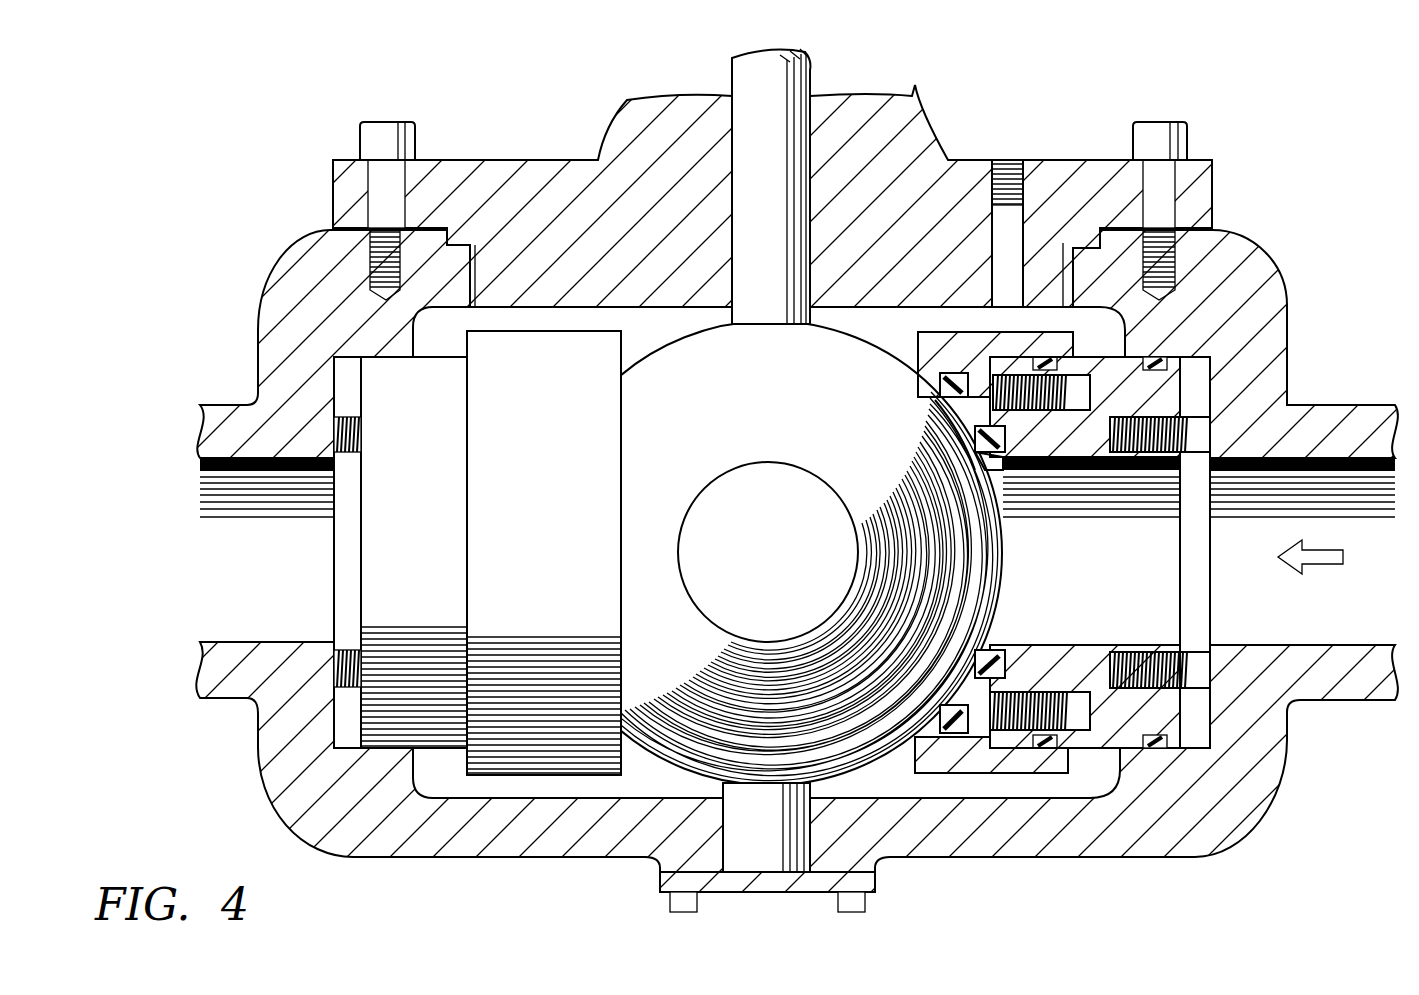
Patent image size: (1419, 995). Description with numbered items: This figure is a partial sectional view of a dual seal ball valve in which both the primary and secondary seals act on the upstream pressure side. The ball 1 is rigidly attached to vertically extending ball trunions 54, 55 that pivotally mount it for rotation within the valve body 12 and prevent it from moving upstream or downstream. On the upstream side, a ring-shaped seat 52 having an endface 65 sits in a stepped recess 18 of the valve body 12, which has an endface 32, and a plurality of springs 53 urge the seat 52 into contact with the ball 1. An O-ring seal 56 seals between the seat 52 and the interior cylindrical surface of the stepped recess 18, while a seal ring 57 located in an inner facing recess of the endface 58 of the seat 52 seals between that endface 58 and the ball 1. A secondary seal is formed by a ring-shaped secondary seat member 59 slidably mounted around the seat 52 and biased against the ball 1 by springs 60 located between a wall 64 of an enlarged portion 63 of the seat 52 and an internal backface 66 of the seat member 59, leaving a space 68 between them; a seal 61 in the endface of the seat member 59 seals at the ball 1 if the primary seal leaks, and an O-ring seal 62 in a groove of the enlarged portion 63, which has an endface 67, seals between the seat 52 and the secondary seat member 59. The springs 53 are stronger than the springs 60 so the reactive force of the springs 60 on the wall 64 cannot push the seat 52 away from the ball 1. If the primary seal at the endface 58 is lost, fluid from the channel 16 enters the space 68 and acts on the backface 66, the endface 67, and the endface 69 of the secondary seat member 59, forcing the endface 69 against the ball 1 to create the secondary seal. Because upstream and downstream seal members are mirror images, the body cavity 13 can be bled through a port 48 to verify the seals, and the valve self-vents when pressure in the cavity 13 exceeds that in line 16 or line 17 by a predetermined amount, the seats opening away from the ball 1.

The ball 1 is at (975, 548).
The valve body 12 is at (1250, 264).
The body cavity 13 is at (1090, 797).
The channel 16 is at (1300, 645).
The line 17 is at (270, 640).
The stepped recess 18 is at (1215, 378).
The endface of stepped recess 32 is at (1205, 570).
The port 48 is at (1006, 165).
The ring-shaped seat 52 is at (1088, 648).
The springs 53 is at (1142, 652).
The ball trunion 54 is at (743, 68).
The ball trunion 55 is at (740, 848).
The O-ring seal 56 is at (1152, 748).
The seal ring 57 is at (975, 437).
The endface of ring-shaped seat 58 is at (990, 460).
The secondary seat member 59 is at (935, 333).
The springs 60 is at (1028, 652).
The seal 61 is at (938, 385).
The O-ring seal 62 is at (1040, 748).
The enlarged portion 63 is at (1128, 334).
The wall 64 is at (1095, 712).
The endface of seat 65 is at (1200, 605).
The internal backface 66 is at (1022, 356).
The endface of enlarged portion 67 is at (1032, 356).
The space 68 is at (998, 739).
The endface of secondary seat member 69 is at (950, 402).